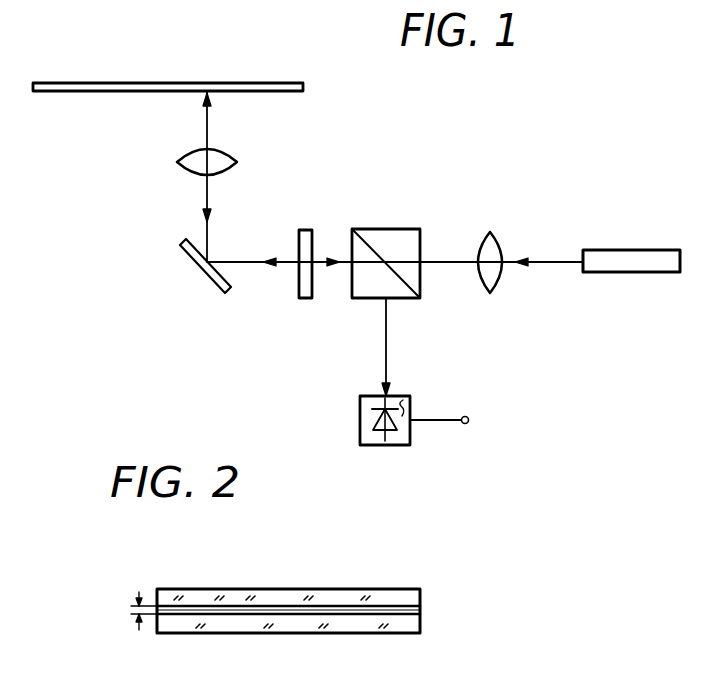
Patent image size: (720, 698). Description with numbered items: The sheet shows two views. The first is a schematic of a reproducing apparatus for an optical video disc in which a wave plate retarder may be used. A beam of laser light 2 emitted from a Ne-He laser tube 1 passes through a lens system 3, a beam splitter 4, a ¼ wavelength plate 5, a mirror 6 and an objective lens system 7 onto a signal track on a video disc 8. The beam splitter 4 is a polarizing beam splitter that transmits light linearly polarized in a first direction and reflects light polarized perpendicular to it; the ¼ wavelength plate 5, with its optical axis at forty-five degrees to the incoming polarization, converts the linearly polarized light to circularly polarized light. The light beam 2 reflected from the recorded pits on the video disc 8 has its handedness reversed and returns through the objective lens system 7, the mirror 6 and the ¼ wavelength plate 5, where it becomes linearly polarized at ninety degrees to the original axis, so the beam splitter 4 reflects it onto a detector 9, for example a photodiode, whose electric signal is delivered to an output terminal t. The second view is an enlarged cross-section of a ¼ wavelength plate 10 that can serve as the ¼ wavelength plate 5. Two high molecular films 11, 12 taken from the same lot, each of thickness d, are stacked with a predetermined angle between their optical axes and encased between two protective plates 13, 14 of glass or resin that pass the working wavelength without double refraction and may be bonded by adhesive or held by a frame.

In FIG. 1, the Ne-He laser tube 1 is at (630, 249).
In FIG. 1, the beam of laser light 2 is at (548, 260).
In FIG. 1, the lens system 3 is at (491, 230).
In FIG. 1, the beam splitter 4 is at (400, 228).
In FIG. 1, the ¼ wavelength plate 5 is at (312, 234).
In FIG. 1, the mirror 6 is at (200, 275).
In FIG. 1, the objective lens system 7 is at (237, 160).
In FIG. 1, the video disc 8 is at (128, 82).
In FIG. 1, the detector 9 is at (385, 446).
In FIG. 1, the output terminal t is at (465, 416).
In FIG. 2, the ¼ wavelength plate 10 is at (480, 623).
In FIG. 2, the film 11 is at (330, 608).
In FIG. 2, the film 12 is at (359, 614).
In FIG. 2, the protective plate 13 is at (218, 592).
In FIG. 2, the protective plate 14 is at (270, 629).
In FIG. 2, the thickness d is at (131, 600).